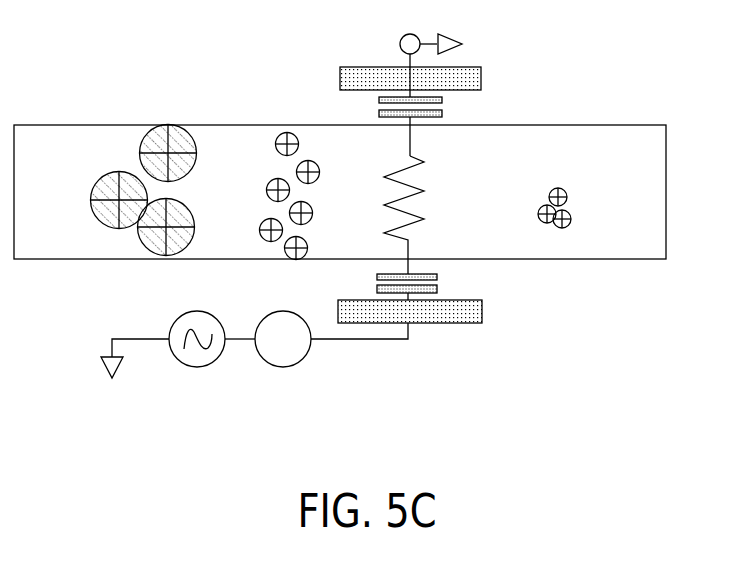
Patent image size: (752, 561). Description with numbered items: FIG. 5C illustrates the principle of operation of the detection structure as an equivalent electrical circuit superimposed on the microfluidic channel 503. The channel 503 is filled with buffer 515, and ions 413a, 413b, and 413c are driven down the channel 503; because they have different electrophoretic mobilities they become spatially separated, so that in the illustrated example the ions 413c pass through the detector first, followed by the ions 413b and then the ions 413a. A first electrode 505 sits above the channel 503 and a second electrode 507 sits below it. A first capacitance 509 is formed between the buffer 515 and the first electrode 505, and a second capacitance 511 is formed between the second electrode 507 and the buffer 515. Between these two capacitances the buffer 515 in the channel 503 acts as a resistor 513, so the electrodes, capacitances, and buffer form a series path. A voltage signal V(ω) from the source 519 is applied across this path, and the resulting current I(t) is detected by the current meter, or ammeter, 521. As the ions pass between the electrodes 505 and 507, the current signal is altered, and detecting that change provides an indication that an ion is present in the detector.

The microfluidic channel 503 is at (618, 125).
The first electrode 505 is at (361, 76).
The second electrode 507 is at (455, 312).
The first capacitance 509 is at (443, 113).
The second capacitance 511 is at (377, 276).
The resistor 513 is at (421, 161).
The buffer 515 is at (643, 222).
The AC voltage source 519 is at (179, 360).
The current meter (ammeter) 521 is at (302, 357).
The ions 413a is at (134, 223).
The ions 413b is at (267, 241).
The ions 413c is at (572, 213).